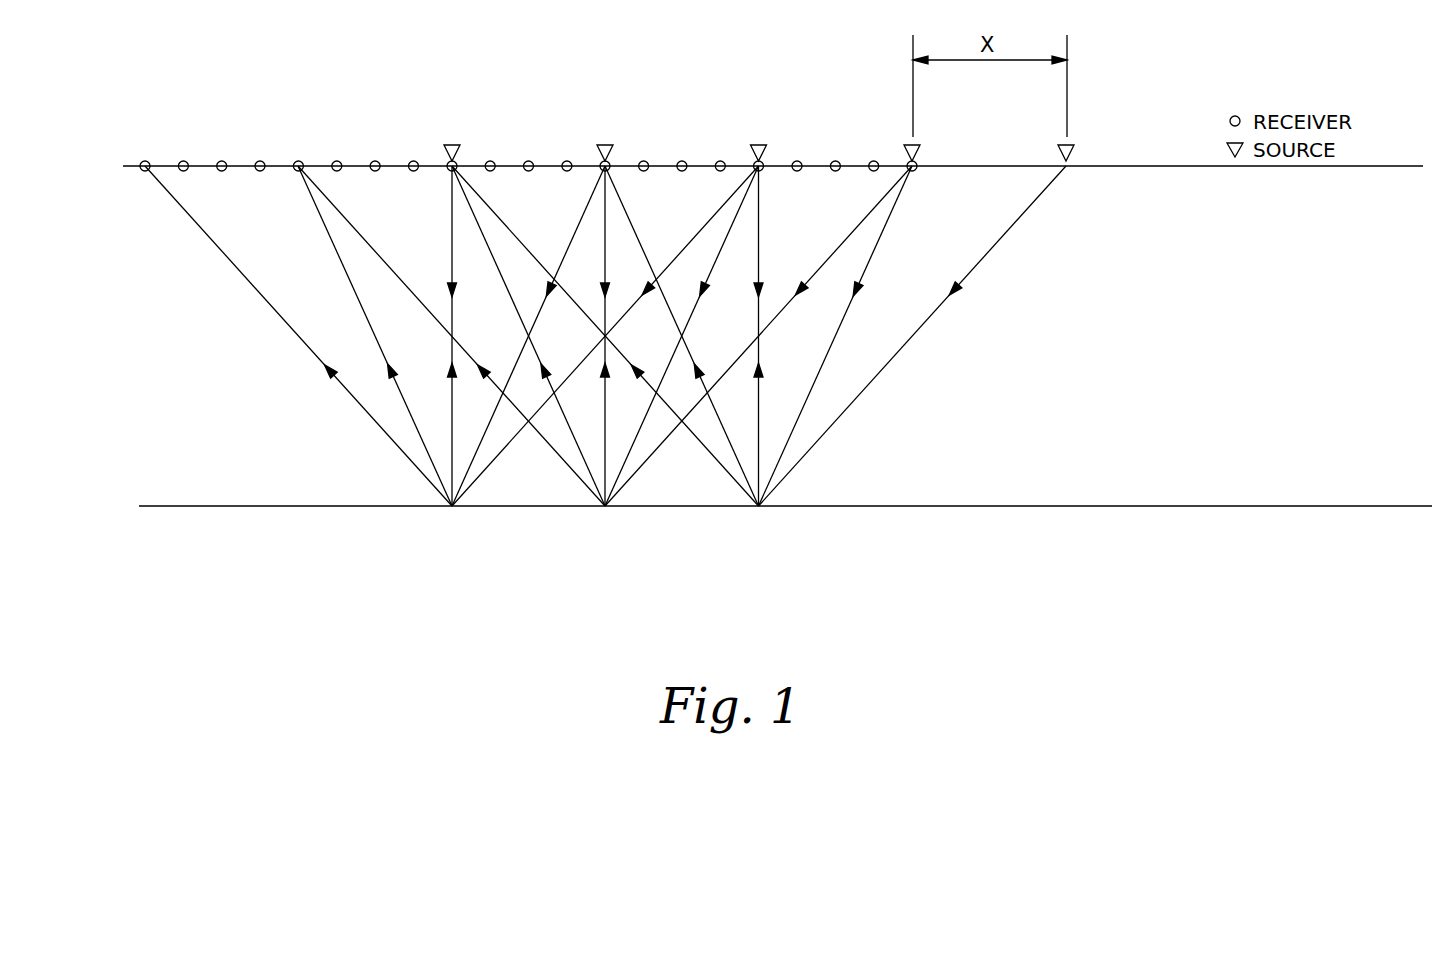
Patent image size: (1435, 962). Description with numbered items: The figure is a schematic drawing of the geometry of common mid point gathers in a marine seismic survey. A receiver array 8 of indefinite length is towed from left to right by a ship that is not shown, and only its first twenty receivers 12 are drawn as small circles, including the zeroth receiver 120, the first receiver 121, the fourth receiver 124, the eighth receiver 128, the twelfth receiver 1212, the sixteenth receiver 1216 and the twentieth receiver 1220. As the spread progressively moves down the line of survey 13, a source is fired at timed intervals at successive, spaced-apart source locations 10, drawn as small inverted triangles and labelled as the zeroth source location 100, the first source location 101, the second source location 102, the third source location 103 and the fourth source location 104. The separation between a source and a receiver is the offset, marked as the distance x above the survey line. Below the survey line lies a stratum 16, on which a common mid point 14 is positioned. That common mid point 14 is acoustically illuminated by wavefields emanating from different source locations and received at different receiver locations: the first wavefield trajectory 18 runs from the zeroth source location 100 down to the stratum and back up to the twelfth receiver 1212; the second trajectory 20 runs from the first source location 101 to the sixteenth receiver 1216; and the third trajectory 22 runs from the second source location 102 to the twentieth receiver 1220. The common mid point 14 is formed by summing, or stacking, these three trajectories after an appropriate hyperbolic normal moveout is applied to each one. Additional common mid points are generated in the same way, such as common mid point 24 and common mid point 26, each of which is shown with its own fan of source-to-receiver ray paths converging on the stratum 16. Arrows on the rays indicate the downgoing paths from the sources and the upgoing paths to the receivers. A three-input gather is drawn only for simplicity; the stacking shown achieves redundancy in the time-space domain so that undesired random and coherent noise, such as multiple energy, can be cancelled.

The receiver array 8 is at (722, 78).
The source locations 10 is at (786, 136).
The source location 10_0 100 is at (455, 145).
The source location 10_1 101 is at (608, 145).
The source location 10_2 102 is at (762, 145).
The source location 10_3 103 is at (916, 145).
The source location 10_4 104 is at (1070, 148).
The receivers 12 is at (521, 166).
The receiver 12_20 1220 is at (145, 161).
The receiver 12_16 1216 is at (298, 161).
The receiver 12_12 1212 is at (450, 163).
The receiver 12_8 128 is at (603, 163).
The receiver 12_4 124 is at (757, 163).
The receiver 12_1 121 is at (870, 172).
The receiver 12_0 120 is at (910, 163).
The line of survey 13 is at (1158, 165).
The common mid point 14 is at (452, 506).
The stratum 16 is at (1158, 505).
The first wavefield trajectory 18 is at (451, 203).
The second trajectory 20 is at (582, 215).
The third trajectory 22 is at (712, 215).
The common mid point 24 is at (605, 506).
The common mid point 26 is at (758, 506).